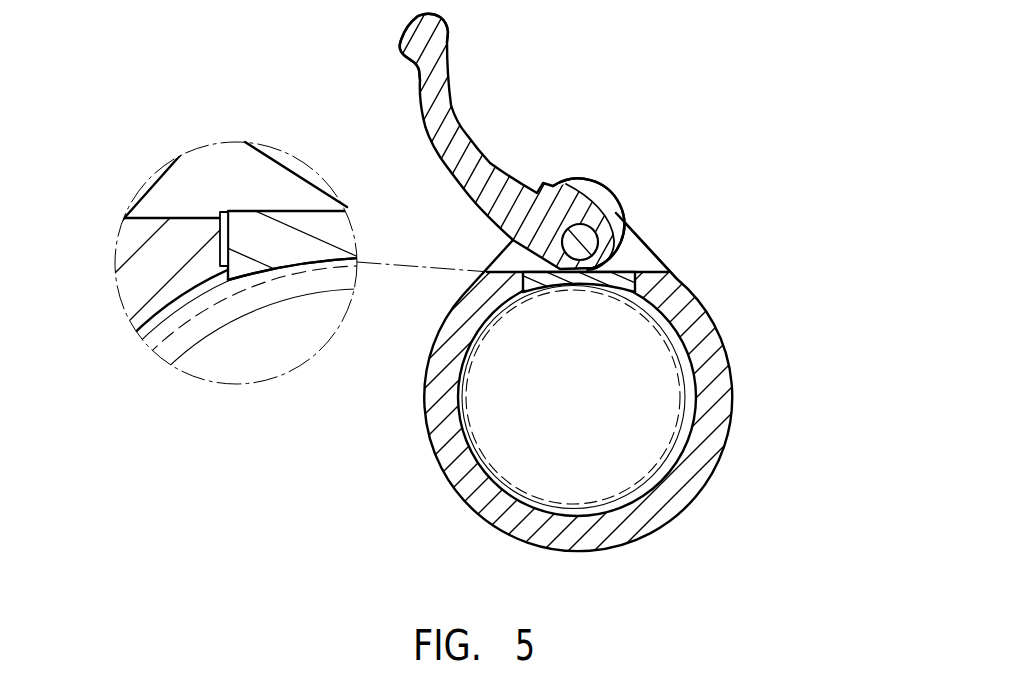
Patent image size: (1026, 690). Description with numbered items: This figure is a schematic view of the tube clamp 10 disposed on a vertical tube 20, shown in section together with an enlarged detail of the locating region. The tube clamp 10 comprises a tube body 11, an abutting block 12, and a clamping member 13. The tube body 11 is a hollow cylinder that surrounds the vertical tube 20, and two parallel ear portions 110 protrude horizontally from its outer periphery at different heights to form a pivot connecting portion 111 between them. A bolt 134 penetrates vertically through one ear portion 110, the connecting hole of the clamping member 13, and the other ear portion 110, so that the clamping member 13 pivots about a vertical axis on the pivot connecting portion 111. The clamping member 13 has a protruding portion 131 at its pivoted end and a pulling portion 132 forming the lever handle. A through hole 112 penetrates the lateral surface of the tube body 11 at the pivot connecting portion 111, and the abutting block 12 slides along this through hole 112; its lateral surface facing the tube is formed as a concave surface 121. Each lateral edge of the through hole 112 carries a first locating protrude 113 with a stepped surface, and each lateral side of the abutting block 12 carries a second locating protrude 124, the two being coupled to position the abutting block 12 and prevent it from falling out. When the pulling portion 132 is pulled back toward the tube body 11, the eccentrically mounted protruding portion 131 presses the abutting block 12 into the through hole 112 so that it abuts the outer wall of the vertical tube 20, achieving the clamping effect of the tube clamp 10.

The tube clamp 10 is at (768, 331).
The tube body 11 is at (732, 388).
The abutting block 12 is at (590, 283).
The clamping member 13 is at (469, 130).
The vertical tube 20 is at (685, 438).
The ear portion 110 is at (602, 200).
The pivot connecting portion 111 is at (627, 250).
The through hole 112 is at (190, 218).
The first locating protrude 113 is at (227, 287).
The concave surface 121 is at (316, 272).
The second locating protrude 124 is at (222, 230).
The protruding portion 131 is at (608, 230).
The pulling portion 132 is at (438, 72).
The bolt 134 is at (579, 240).